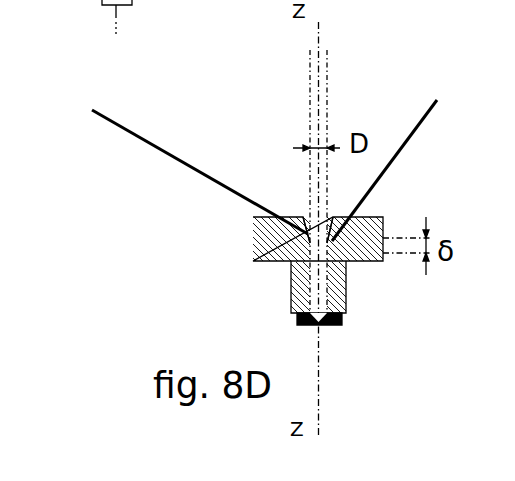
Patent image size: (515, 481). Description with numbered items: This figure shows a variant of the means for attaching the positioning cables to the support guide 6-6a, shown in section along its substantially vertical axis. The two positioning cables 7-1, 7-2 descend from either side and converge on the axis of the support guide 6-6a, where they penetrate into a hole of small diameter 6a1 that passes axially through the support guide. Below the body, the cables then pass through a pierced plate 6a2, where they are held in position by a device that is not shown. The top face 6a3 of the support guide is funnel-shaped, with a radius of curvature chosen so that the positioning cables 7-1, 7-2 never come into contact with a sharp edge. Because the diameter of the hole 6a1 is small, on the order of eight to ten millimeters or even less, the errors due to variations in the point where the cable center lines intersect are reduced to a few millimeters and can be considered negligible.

The positioning cable 7-1 is at (134, 137).
The positioning cable 7-2 is at (402, 147).
The support guide 6-6a is at (253, 232).
The hole of small diameter 6a1 is at (328, 123).
The pierced plate 6a2 is at (332, 324).
The top face 6a3 is at (302, 217).